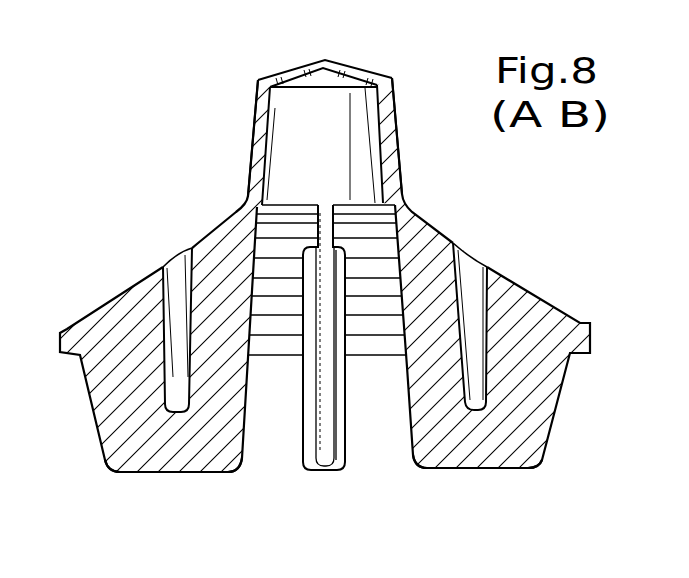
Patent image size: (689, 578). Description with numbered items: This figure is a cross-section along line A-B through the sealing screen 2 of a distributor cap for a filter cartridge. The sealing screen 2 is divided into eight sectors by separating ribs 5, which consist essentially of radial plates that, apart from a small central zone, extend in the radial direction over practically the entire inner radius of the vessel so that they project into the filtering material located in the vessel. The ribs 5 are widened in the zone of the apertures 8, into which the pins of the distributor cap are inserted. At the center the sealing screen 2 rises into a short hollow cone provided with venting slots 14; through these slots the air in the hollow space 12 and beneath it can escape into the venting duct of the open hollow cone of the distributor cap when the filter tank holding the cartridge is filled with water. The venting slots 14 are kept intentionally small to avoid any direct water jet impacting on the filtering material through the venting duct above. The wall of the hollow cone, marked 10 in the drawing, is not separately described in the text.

The sealing screen 2 is at (128, 268).
The separating ribs 5 is at (132, 437).
The apertures 8 is at (183, 278).
The wall of the head 10 is at (262, 123).
The hollow space 12 is at (291, 168).
The venting slots 14 is at (295, 75).